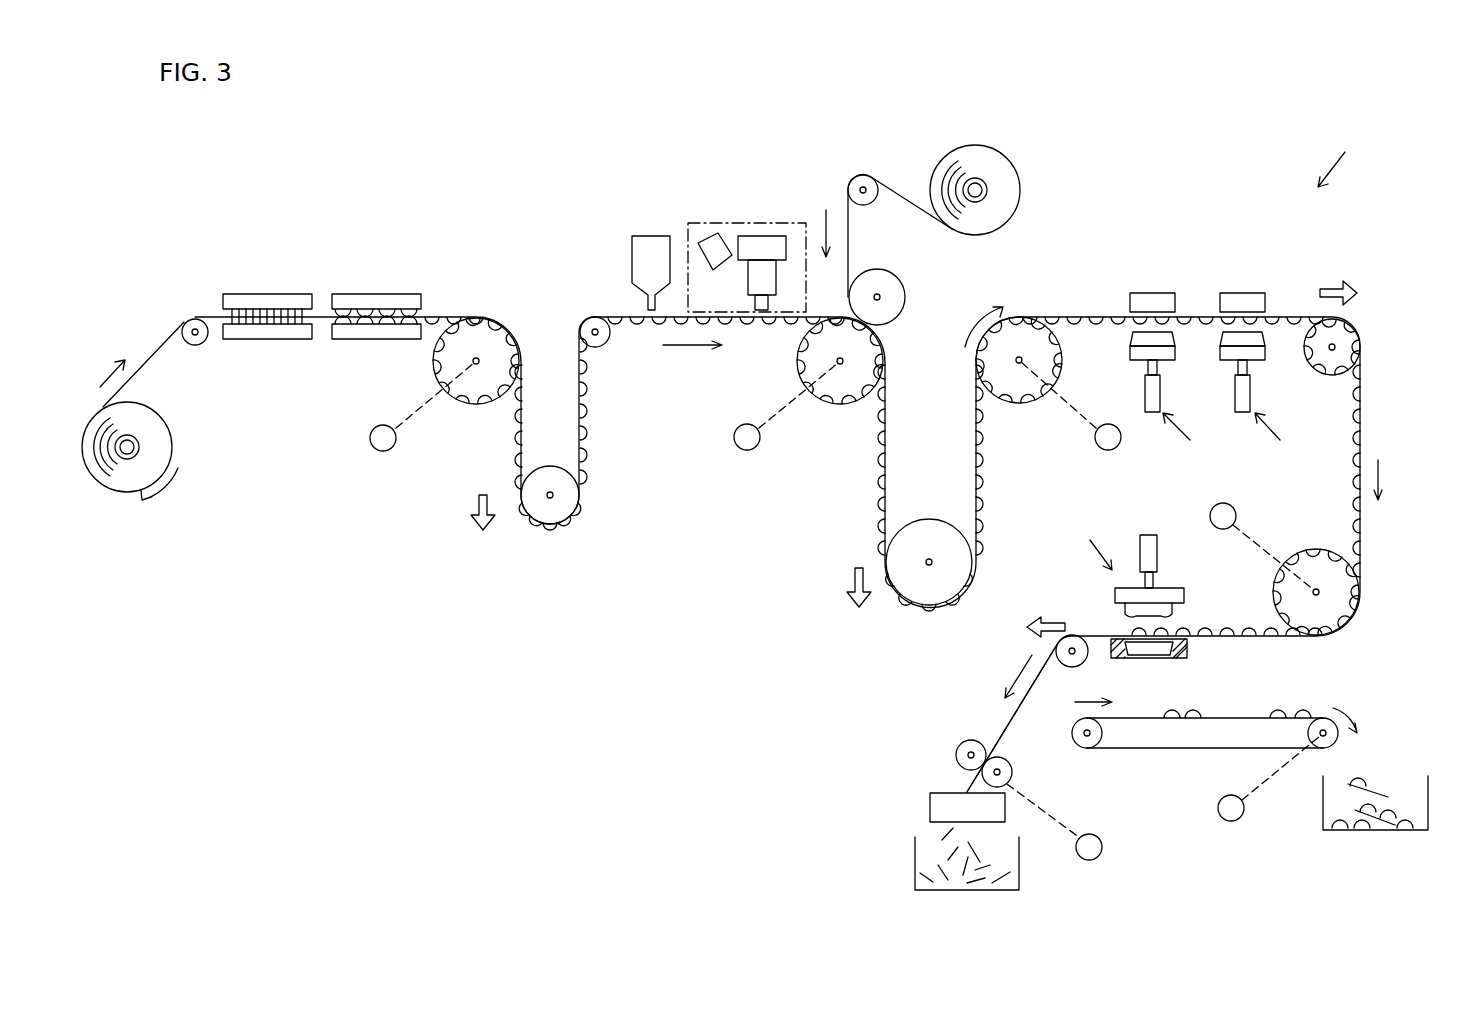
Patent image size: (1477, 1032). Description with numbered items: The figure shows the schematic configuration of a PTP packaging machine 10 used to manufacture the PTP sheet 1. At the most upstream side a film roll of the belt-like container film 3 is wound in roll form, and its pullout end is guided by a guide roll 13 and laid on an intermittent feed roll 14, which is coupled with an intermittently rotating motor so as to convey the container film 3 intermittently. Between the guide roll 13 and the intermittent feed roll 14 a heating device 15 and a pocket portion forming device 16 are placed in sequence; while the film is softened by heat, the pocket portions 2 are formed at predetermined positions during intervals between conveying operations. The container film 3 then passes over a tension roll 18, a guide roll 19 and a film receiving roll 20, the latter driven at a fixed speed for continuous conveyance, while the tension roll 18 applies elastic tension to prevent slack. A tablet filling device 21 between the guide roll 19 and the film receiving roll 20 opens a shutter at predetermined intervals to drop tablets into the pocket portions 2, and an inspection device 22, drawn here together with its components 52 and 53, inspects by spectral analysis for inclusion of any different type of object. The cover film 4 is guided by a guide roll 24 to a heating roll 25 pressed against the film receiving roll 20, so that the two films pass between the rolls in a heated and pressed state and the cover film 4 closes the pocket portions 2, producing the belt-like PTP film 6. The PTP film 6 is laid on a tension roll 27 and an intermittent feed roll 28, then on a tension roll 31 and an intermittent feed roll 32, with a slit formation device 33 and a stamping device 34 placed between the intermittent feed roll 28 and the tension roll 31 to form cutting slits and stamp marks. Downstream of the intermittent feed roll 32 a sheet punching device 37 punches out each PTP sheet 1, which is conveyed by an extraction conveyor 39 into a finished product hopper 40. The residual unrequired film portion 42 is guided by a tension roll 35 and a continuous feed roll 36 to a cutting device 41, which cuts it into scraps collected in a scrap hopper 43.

The PTP sheet 1 is at (1280, 710).
The pocket portion 2 is at (417, 332).
The container film 3 is at (153, 352).
The cover film 4 is at (897, 185).
The PTP film 6 is at (877, 425).
The PTP packaging machine 10 is at (1386, 146).
The guide roll 13 is at (196, 347).
The intermittent feed roll 14 is at (462, 405).
The heating device 15 is at (270, 292).
The pocket portion forming device 16 is at (373, 292).
The tension roll 18 is at (562, 525).
The guide roll 19 is at (604, 347).
The film receiving roll 20 is at (797, 371).
The tablet filling device 21 is at (631, 262).
The inspection device 22 is at (748, 220).
The guide roll 24 is at (870, 203).
The heating roll 25 is at (907, 298).
The tension roll 27 is at (893, 597).
The intermittent feed roll 28 is at (1025, 320).
The tension roll 31 is at (1362, 331).
The intermittent feed roll 32 is at (1360, 578).
The slit formation device 33 is at (1176, 379).
The stamping device 34 is at (1266, 380).
The tension roll 35 is at (1068, 670).
The continuous feed roll 36 is at (1013, 770).
The sheet punching device 37 is at (1125, 585).
The extraction conveyor 39 is at (1328, 720).
The finished product hopper 40 is at (1323, 818).
The cutting device 41 is at (928, 805).
The unrequired film portion 42 is at (1005, 723).
The scrap hopper 43 is at (913, 860).
The sensor 52 is at (708, 238).
The camera 53 is at (762, 232).